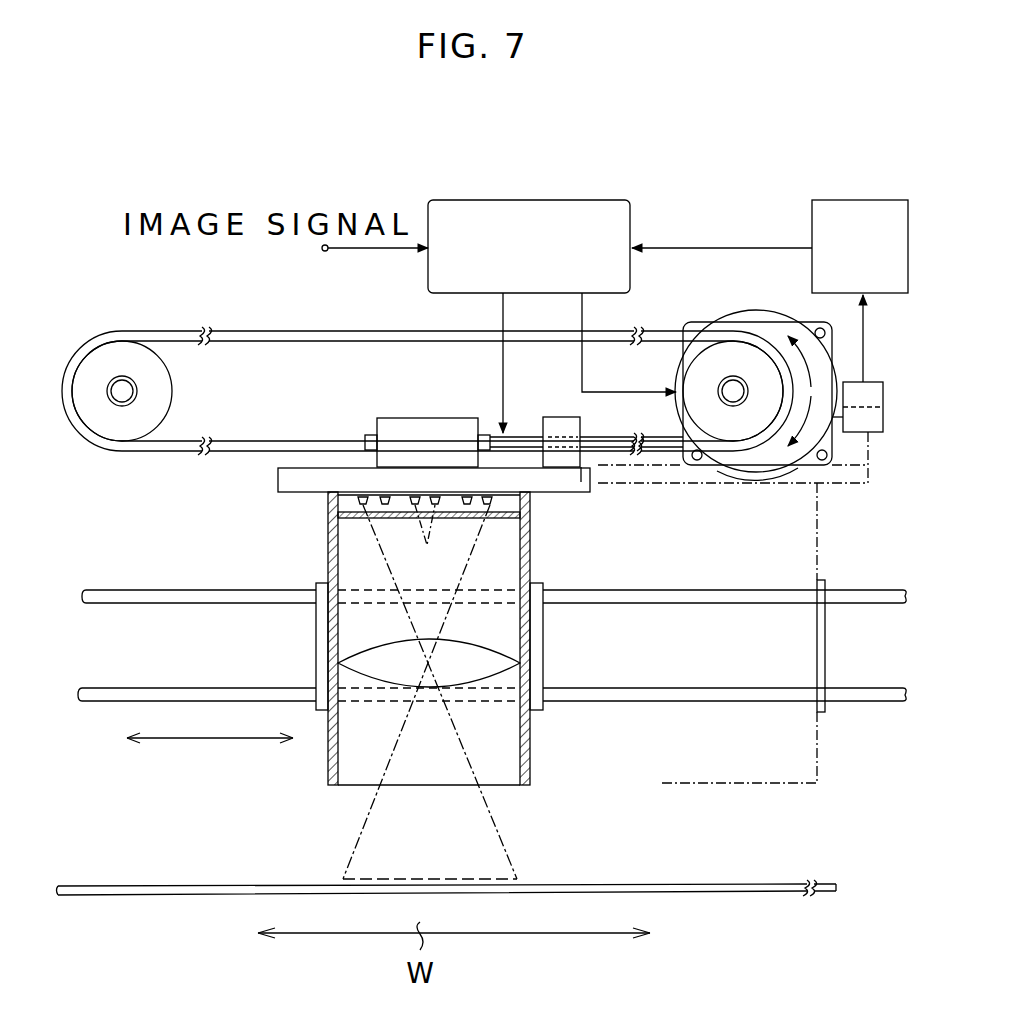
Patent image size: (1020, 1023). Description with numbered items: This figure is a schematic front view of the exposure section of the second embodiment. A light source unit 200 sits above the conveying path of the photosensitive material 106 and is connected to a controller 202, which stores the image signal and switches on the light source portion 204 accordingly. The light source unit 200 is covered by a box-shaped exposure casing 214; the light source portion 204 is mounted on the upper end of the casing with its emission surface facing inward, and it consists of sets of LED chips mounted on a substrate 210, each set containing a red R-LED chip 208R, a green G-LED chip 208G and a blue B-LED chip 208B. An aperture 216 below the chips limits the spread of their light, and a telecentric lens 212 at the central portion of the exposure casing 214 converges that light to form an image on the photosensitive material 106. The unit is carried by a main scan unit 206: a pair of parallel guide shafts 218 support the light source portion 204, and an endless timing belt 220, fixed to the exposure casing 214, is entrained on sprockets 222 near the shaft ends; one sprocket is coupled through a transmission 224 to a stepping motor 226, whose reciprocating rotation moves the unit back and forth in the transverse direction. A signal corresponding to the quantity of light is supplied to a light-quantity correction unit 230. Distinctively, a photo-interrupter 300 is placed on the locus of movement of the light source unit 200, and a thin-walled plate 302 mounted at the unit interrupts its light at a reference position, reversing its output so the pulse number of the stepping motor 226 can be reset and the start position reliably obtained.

The photosensitive material 106 is at (711, 885).
The light source unit 200 is at (579, 543).
The controller 202 is at (636, 222).
The light source portion 204 is at (350, 504).
The main scan unit 206 is at (148, 464).
The R-LED chip 208R is at (381, 515).
The G-LED chip 208G is at (429, 537).
The B-LED chip 208B is at (478, 507).
The substrate 210 is at (528, 493).
The telecentric lens 212 is at (378, 668).
The exposure casing 214 is at (532, 748).
The aperture 216 is at (341, 519).
The guide shafts 218 is at (674, 602).
The timing belt 220 is at (306, 438).
The sprockets 222 is at (167, 390).
The transmission 224 is at (784, 455).
The stepping motor 226 is at (752, 472).
The light-quantity correction unit 230 is at (858, 200).
The photo-interrupter 300 is at (845, 377).
The thin-walled plate 302 is at (553, 417).